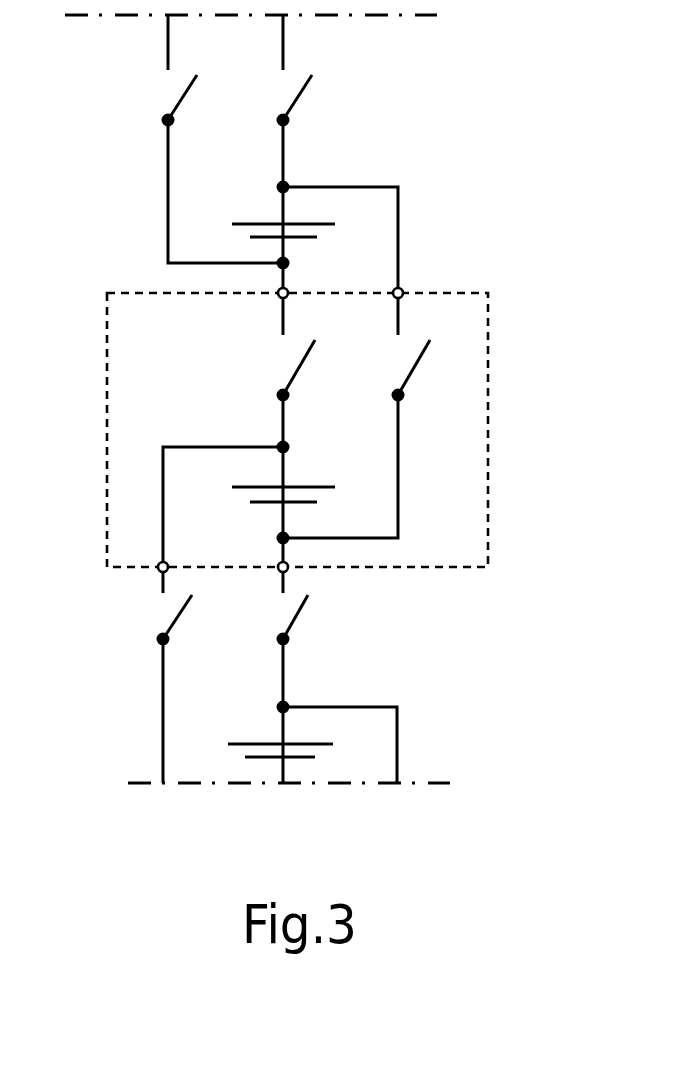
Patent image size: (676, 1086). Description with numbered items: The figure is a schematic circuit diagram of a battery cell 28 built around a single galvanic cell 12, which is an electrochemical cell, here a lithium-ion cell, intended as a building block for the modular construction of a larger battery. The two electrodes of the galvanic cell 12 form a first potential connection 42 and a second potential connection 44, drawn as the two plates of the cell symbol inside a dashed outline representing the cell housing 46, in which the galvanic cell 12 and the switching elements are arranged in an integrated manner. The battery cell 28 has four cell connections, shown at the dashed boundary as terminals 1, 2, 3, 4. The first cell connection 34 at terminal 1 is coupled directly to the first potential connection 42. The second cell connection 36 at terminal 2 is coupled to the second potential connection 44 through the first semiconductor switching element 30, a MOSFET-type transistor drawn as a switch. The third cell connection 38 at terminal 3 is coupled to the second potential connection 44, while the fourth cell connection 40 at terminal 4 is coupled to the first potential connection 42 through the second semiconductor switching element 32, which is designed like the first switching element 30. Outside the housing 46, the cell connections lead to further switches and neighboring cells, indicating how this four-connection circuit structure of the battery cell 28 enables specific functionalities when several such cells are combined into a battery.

The galvanic cell 12 is at (373, 493).
The battery cell 28 is at (329, 377).
The first semiconductor switching element 30 is at (297, 368).
The second semiconductor switching element 32 is at (413, 368).
The first cell connection 34 is at (314, 575).
The second cell connection 36 is at (214, 262).
The third cell connection 38 is at (118, 591).
The fourth cell connection 40 is at (418, 258).
The first potential connection 42 is at (287, 503).
The second potential connection 44 is at (283, 485).
The cell housing 46 is at (488, 474).
The terminal 1 is at (271, 564).
The terminal 2 is at (311, 328).
The terminal 3 is at (151, 552).
The terminal 4 is at (391, 328).